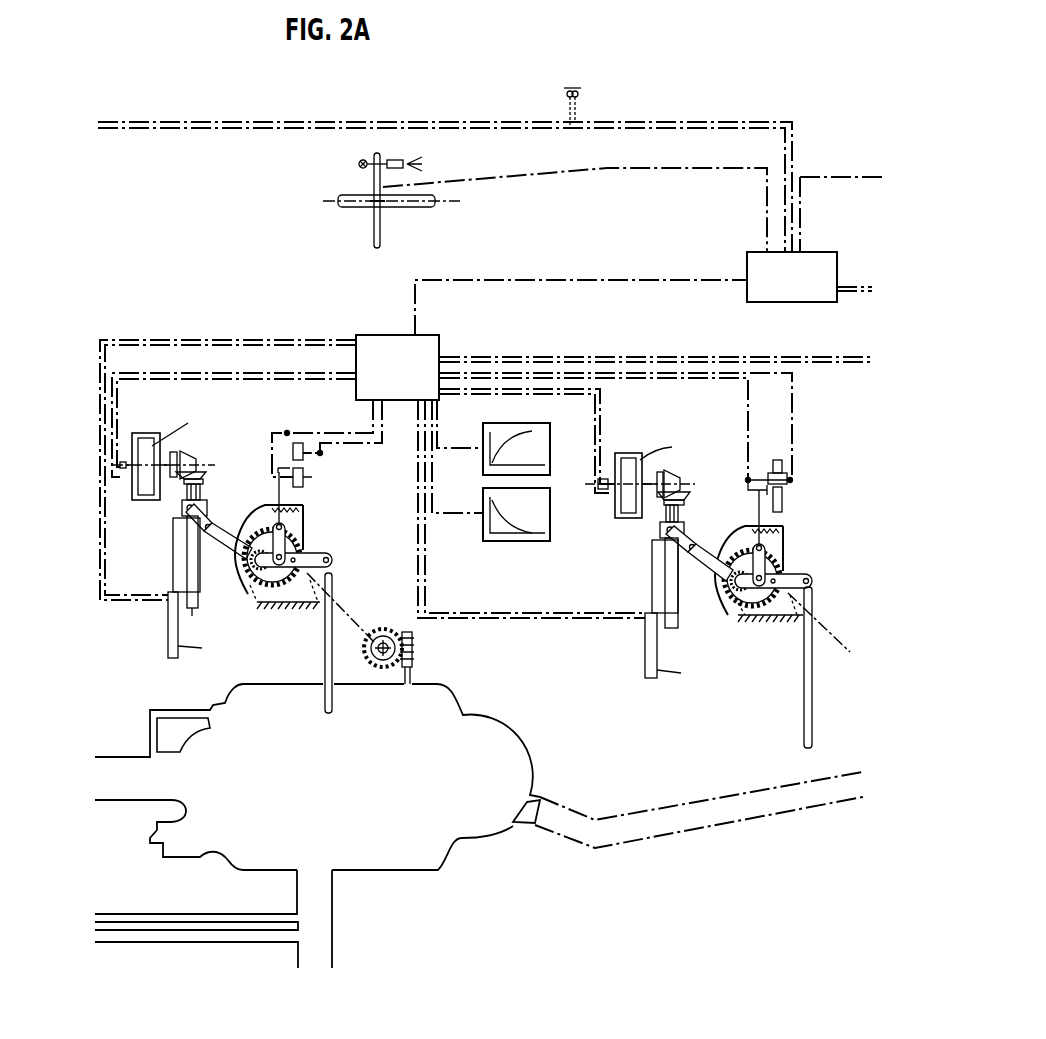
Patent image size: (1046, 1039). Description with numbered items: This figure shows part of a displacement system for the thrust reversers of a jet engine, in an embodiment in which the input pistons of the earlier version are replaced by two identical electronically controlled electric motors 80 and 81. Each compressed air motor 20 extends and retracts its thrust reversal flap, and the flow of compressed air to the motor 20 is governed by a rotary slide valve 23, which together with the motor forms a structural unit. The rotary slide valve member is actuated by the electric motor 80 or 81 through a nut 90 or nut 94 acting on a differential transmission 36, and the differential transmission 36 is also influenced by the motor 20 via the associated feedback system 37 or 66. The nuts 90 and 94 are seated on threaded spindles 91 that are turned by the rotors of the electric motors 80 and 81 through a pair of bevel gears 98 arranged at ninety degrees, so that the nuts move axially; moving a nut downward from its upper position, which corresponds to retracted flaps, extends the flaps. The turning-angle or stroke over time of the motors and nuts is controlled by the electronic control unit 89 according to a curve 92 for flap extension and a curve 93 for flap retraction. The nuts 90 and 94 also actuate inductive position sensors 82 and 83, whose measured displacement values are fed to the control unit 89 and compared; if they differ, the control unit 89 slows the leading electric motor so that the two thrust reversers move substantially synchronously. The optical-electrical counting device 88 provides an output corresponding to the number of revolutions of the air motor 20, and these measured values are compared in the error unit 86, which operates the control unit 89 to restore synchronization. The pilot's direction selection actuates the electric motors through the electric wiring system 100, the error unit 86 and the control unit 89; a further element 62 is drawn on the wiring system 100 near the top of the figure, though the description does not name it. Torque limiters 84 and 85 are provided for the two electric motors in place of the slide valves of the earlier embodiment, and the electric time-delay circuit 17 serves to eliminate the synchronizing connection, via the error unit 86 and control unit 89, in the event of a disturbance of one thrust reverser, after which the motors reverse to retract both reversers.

The electric wiring system 100 is at (650, 127).
The speed sensor 62 is at (611, 108).
The optical-electrical counting device 88 is at (408, 155).
The error unit 86 is at (818, 265).
The electric time-delay circuit 17 is at (855, 294).
The electronic control unit 89 is at (441, 348).
The curve for flap extension 92 is at (505, 450).
The curve for flap retraction 93 is at (516, 531).
The electric motor 80 is at (142, 447).
The pair of bevel gears 98 is at (198, 478).
The nut 90 is at (206, 508).
The threaded spindle 91 is at (197, 567).
The inductive position sensor 82 is at (168, 612).
The torque limiter 84 is at (304, 478).
The differential transmission 36 is at (332, 545).
The feedback system 37 is at (367, 628).
The electric motor 81 is at (622, 462).
The nut 94 is at (685, 530).
The inductive position sensor 83 is at (648, 633).
The torque limiter 85 is at (789, 482).
The feedback system 66 is at (836, 636).
The compressed air motor 20 is at (493, 870).
The rotary slide valve 23 is at (185, 743).